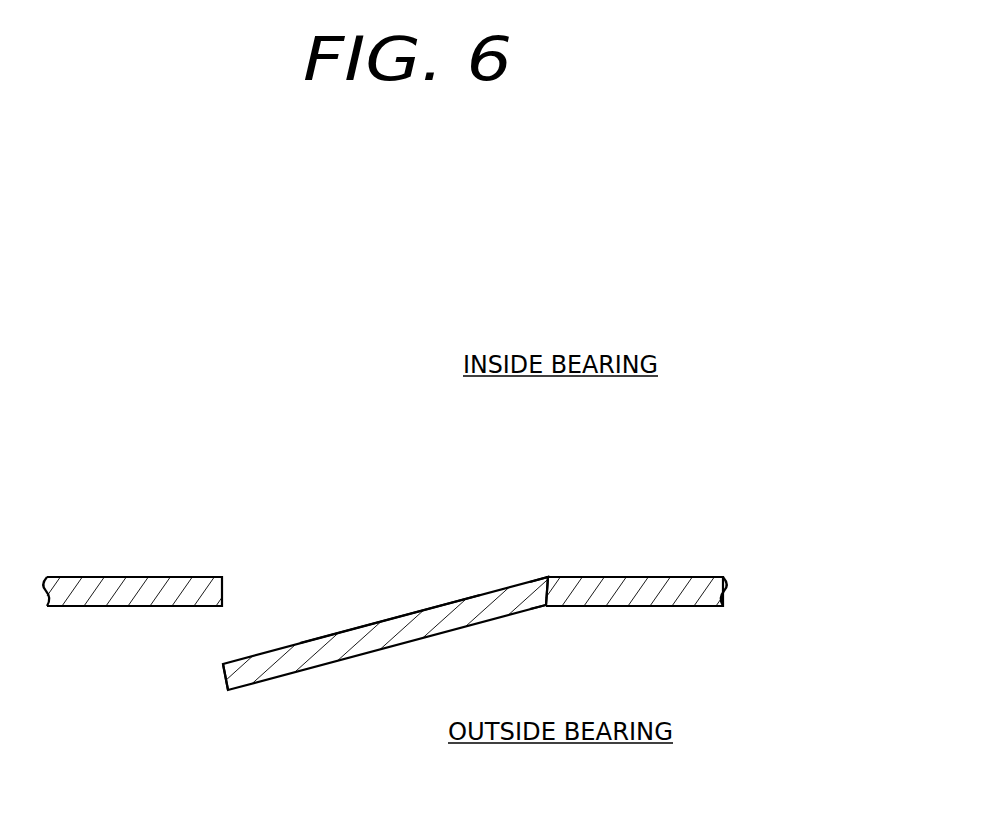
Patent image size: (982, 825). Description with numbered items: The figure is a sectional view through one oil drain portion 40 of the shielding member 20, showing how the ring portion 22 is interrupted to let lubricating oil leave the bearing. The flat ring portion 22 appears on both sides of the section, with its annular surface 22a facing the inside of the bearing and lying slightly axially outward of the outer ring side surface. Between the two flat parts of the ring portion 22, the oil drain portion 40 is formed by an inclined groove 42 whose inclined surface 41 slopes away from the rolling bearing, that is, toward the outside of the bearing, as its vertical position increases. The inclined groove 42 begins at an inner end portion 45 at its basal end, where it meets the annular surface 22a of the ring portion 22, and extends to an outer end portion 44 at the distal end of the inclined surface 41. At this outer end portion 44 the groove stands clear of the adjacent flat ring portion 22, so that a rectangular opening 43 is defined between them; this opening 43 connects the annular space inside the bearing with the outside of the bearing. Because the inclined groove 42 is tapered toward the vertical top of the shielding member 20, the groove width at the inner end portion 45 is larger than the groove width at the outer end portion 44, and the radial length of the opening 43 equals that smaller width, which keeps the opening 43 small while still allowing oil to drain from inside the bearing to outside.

The shielding member 20 is at (562, 577).
The ring portion 22 is at (72, 591).
The annular surface 22a is at (170, 577).
The oil drain portion 40 is at (347, 522).
The inclined surface 41 is at (412, 612).
The inclined groove 42 is at (285, 615).
The opening 43 is at (196, 630).
The outer end portion 44 is at (224, 663).
The inner end portion 45 is at (547, 577).